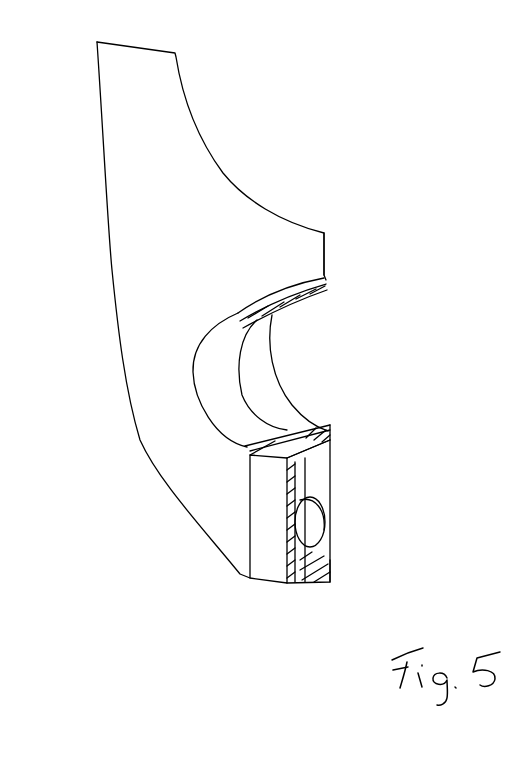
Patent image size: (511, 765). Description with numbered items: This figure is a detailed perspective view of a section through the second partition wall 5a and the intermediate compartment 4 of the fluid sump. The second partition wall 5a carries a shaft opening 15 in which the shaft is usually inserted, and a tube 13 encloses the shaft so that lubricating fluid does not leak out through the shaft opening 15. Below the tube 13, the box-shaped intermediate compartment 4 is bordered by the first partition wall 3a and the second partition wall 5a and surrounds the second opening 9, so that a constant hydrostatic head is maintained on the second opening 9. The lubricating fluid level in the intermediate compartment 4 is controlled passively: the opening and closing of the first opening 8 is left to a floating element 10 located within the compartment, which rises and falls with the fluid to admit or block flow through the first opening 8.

The second partition wall 5a is at (136, 153).
The tube 13 is at (220, 388).
The shaft opening 15 is at (310, 346).
The first opening 8 is at (330, 443).
The floating element 10 is at (312, 512).
The second opening 9 is at (332, 553).
The first partition wall 3a is at (272, 543).
The intermediate compartment 4 is at (307, 583).